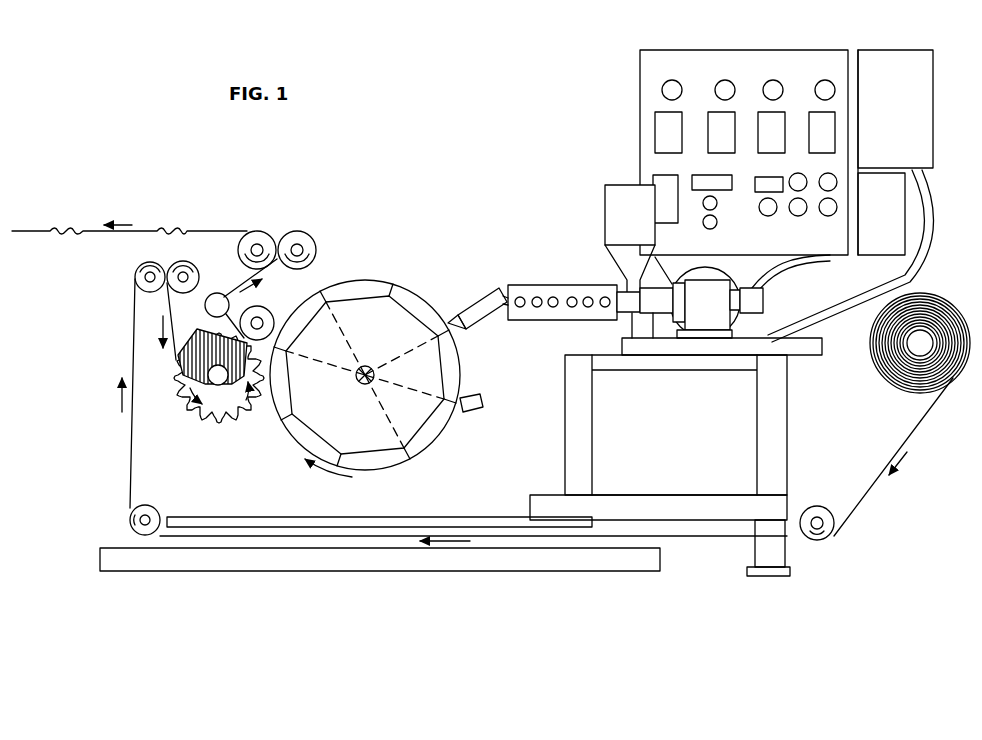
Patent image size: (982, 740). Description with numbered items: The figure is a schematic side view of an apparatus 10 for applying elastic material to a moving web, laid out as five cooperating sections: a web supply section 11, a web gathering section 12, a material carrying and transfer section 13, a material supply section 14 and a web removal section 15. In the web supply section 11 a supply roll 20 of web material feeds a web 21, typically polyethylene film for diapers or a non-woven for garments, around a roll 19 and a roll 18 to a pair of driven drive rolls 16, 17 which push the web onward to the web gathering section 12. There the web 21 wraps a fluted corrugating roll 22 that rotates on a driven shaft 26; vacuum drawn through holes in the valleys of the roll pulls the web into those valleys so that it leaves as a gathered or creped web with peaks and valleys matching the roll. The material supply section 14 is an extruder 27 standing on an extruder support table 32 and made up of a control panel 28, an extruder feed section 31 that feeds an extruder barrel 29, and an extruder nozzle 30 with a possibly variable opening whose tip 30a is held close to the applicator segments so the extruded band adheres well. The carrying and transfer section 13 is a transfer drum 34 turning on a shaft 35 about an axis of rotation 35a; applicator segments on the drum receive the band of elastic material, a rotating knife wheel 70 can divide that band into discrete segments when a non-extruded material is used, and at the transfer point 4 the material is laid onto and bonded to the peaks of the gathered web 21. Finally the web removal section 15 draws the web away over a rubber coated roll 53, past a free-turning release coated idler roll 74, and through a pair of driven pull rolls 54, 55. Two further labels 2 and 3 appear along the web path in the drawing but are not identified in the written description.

The web strip 2 is at (234, 308).
The web 3 is at (148, 230).
The transfer point 4 is at (257, 418).
The apparatus 10 is at (427, 240).
The web supply section 11 is at (100, 305).
The web gathering section 12 is at (212, 431).
The material carrying and transfer section 13 is at (390, 282).
The material supply section 14 is at (573, 253).
The web removal section 15 is at (280, 226).
The drive roll 16 is at (150, 293).
The drive roll 17 is at (186, 294).
The roll 18 is at (149, 505).
The roll 19 is at (816, 511).
The supply roll 20 is at (912, 352).
The web of material 21 is at (943, 304).
The fluted corrugating roll 22 is at (192, 403).
The shaft 26 is at (218, 386).
The extruder 27 is at (938, 160).
The control panel 28 is at (640, 88).
The extruder barrel 29 is at (580, 285).
The extruder nozzle 30 is at (493, 318).
The tip of extruder nozzle 30a is at (450, 321).
The extruder feed section 31 is at (613, 187).
The extruder support table 32 is at (568, 436).
The transfer drum 34 is at (350, 283).
The shaft 35 is at (367, 366).
The axis of rotation 35a is at (359, 378).
The rubber coated roll 53 is at (263, 314).
The pull roll 54 is at (240, 252).
The pull roll 55 is at (314, 245).
The rotating knife wheel 70 is at (481, 405).
The release coated idler roll 74 is at (217, 293).